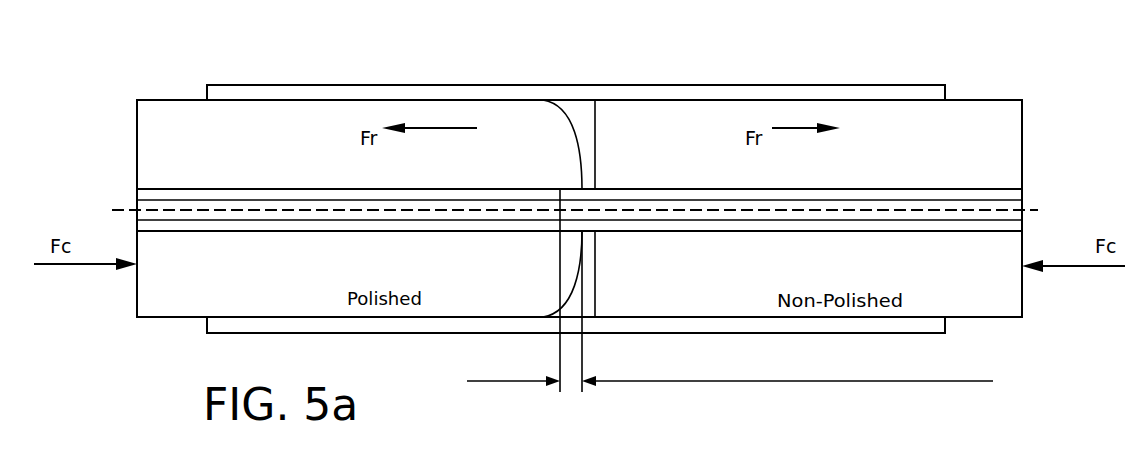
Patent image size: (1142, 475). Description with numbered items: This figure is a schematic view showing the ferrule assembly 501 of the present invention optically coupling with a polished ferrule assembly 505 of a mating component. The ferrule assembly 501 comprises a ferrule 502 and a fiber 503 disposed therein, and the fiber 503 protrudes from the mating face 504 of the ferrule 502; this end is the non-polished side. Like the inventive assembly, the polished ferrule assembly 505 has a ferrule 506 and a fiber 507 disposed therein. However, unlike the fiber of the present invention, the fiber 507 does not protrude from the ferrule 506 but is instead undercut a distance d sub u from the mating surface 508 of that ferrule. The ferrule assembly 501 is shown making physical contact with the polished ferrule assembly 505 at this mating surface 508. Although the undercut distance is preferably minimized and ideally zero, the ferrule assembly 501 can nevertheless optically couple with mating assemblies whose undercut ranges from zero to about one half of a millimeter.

The ferrule assembly 501 is at (980, 115).
The ferrule 502 is at (1005, 155).
The fiber 503 is at (987, 227).
The mating face 504 is at (588, 125).
The polished ferrule assembly 505 is at (281, 133).
The ferrule 506 is at (165, 153).
The fiber 507 is at (140, 195).
The mating surface 508 is at (567, 120).